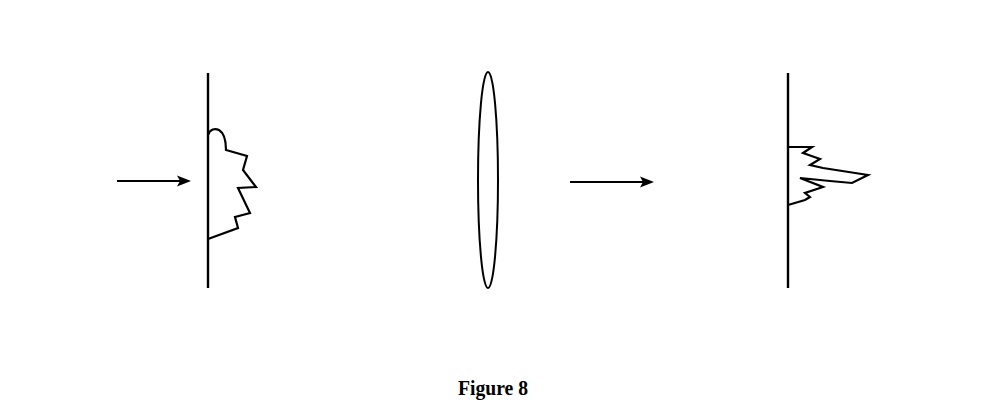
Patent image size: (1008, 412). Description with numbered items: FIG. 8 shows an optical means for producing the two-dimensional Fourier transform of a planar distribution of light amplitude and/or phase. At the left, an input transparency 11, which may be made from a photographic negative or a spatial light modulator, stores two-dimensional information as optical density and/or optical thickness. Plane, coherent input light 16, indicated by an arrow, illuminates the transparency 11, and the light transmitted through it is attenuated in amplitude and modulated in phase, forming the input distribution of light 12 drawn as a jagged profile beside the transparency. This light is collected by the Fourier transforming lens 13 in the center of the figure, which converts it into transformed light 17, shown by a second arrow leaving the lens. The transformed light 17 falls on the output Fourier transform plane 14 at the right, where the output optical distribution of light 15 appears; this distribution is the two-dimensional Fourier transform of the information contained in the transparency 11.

The input transparency 11 is at (207, 100).
The input distribution of light 12 is at (253, 153).
The Fourier transforming lens 13 is at (497, 67).
The output Fourier transform plane 14 is at (789, 67).
The output optical distribution of light 15 is at (826, 152).
The input light 16 is at (128, 177).
The transformed light 17 is at (585, 189).